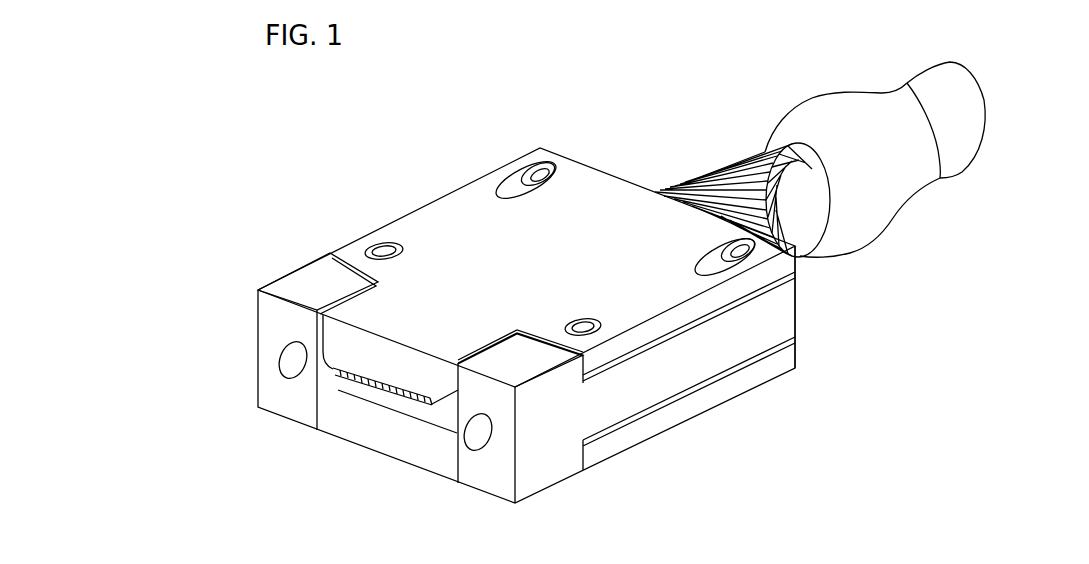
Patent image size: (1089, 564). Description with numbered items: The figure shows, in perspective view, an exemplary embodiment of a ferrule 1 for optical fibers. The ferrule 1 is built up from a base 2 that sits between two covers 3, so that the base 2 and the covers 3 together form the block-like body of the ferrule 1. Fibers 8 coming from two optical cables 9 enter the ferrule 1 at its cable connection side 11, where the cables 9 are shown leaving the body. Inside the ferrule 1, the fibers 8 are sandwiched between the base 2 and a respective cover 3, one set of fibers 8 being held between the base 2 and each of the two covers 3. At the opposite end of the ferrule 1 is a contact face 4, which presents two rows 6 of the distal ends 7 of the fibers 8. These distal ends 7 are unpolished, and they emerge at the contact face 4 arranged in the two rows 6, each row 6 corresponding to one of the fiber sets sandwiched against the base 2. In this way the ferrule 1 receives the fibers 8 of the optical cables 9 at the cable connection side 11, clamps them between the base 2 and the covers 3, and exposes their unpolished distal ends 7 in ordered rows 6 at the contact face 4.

The ferrule 1 is at (629, 89).
The base 2 is at (780, 312).
The cover 3 is at (648, 330).
The contact face 4 is at (193, 365).
The rows 6 is at (346, 380).
The unpolished distal ends 7 is at (425, 413).
The fibers 8 is at (690, 180).
The optical cables 9 is at (968, 141).
The cable connection side 11 is at (854, 286).